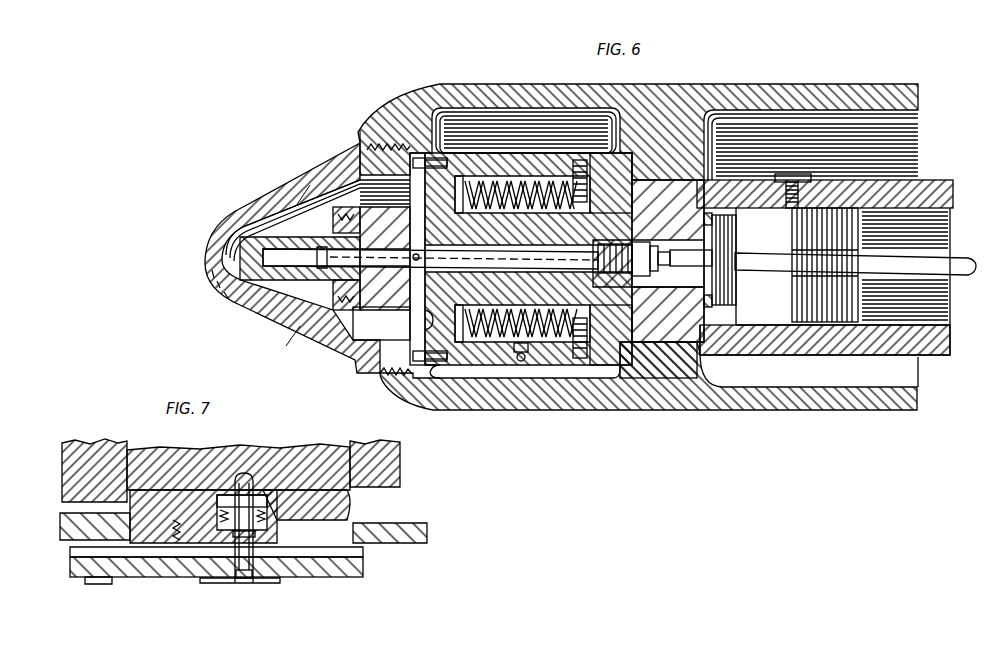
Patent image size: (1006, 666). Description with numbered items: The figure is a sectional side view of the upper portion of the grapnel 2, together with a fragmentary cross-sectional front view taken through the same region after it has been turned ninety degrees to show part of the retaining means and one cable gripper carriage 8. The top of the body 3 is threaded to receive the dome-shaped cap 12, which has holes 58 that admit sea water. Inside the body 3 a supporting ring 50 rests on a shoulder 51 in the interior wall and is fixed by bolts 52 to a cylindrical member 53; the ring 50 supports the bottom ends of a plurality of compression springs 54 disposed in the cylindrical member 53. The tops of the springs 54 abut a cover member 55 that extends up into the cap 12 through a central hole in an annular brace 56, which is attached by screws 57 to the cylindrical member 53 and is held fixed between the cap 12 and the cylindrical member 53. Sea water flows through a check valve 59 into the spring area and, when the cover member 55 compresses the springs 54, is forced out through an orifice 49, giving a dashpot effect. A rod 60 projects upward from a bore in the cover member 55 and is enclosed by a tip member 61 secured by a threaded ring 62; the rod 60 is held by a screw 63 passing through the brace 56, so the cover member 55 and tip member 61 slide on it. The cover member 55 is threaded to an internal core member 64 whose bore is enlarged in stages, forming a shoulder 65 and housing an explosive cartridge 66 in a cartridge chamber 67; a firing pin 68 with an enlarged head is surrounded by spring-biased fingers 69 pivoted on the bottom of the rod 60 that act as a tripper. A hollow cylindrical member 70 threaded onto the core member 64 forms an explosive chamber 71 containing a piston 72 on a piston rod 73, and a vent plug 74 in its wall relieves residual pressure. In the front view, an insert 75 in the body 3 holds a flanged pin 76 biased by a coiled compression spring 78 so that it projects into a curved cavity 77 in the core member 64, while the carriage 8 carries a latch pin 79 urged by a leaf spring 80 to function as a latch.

In FIG. 6, the grapnel 2 is at (519, 67).
In FIG. 6, the body 3 is at (420, 388).
In FIG. 7, the body 3 is at (66, 524).
In FIG. 7, the cable gripper carriage 8 is at (338, 572).
In FIG. 6, the dome-shaped cap 12 is at (257, 210).
In FIG. 6, the orifice 49 is at (457, 322).
In FIG. 6, the supporting ring 50 is at (640, 352).
In FIG. 7, the supporting ring 50 is at (101, 453).
In FIG. 6, the shoulder 51 is at (666, 372).
In FIG. 7, the shoulder 51 is at (125, 538).
In FIG. 6, the bolts 52 is at (586, 362).
In FIG. 6, the cylindrical member 53 is at (576, 338).
In FIG. 6, the compression springs 54 is at (486, 330).
In FIG. 6, the cover member 55 is at (430, 374).
In FIG. 6, the annular brace 56 is at (410, 321).
In FIG. 6, the screws 57 is at (396, 145).
In FIG. 6, the holes 58 is at (325, 186).
In FIG. 6, the check valve 59 is at (521, 362).
In FIG. 6, the rod 60 is at (404, 279).
In FIG. 6, the tip member 61 is at (268, 280).
In FIG. 6, the threaded ring 62 is at (340, 297).
In FIG. 6, the screw 63 is at (413, 254).
In FIG. 6, the internal core member 64 is at (648, 284).
In FIG. 7, the internal core member 64 is at (155, 458).
In FIG. 6, the shoulder 65 is at (690, 325).
In FIG. 6, the explosive cartridge 66 is at (668, 272).
In FIG. 6, the cartridge chamber 67 is at (690, 262).
In FIG. 6, the firing pin 68 is at (602, 280).
In FIG. 6, the spring-biased fingers 69 is at (718, 333).
In FIG. 6, the hollow cylindrical member 70 is at (938, 190).
In FIG. 7, the hollow cylindrical member 70 is at (374, 485).
In FIG. 6, the explosive chamber 71 is at (944, 300).
In FIG. 6, the piston 72 is at (856, 286).
In FIG. 6, the piston rod 73 is at (965, 258).
In FIG. 6, the vent plug 74 is at (792, 174).
In FIG. 7, the insert 75 is at (200, 532).
In FIG. 7, the flanged pin 76 is at (244, 483).
In FIG. 7, the cavity 77 is at (277, 480).
In FIG. 7, the coiled compression spring 78 is at (226, 496).
In FIG. 7, the latch pin 79 is at (245, 578).
In FIG. 7, the leaf spring 80 is at (279, 582).